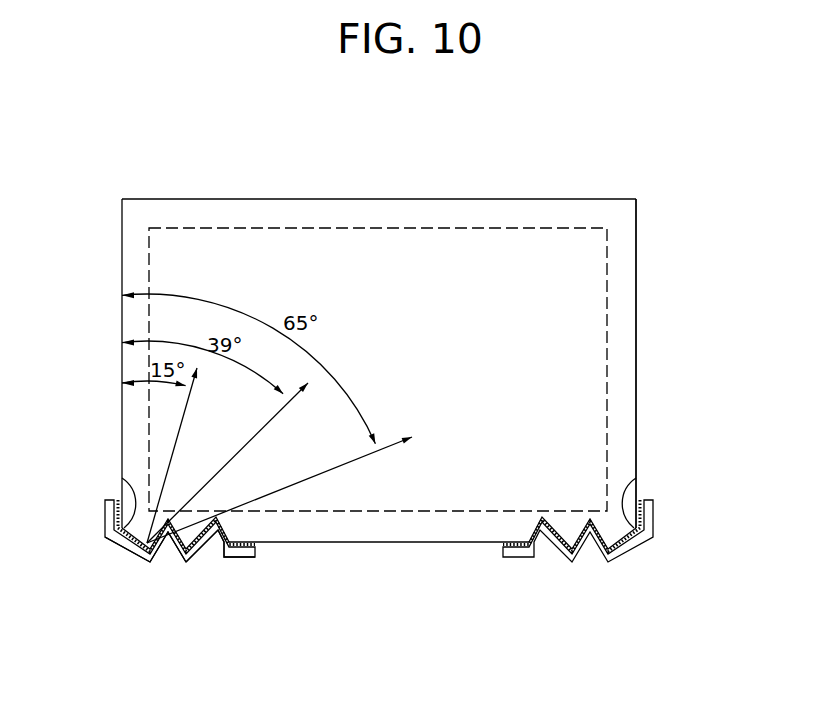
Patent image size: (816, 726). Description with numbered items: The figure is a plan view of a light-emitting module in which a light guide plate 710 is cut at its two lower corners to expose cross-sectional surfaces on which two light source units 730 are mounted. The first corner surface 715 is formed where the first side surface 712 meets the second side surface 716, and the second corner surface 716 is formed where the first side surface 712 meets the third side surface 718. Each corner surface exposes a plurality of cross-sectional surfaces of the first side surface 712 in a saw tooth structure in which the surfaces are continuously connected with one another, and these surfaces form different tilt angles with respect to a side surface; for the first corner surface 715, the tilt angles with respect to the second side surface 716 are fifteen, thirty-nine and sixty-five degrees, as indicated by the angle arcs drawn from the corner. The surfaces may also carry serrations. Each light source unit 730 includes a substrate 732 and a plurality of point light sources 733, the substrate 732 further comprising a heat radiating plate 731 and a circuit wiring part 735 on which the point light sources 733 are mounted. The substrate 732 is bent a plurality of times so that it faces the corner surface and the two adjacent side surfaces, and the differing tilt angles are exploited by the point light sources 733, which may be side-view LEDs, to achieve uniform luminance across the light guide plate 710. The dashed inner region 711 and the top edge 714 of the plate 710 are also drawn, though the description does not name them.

The light guide plate 710 is at (645, 262).
The display area 711 is at (460, 248).
The first side surface 712 is at (388, 547).
The top portion of frame 714 is at (370, 199).
The first corner surface 715 is at (120, 478).
The second side surface 716 is at (122, 422).
The third side surface 718 is at (636, 392).
The light source unit 730 is at (378, 592).
The heat radiating plate 731 is at (130, 565).
The substrate 732 is at (183, 612).
The point light sources 733 is at (216, 565).
The circuit wiring part 735 is at (160, 565).